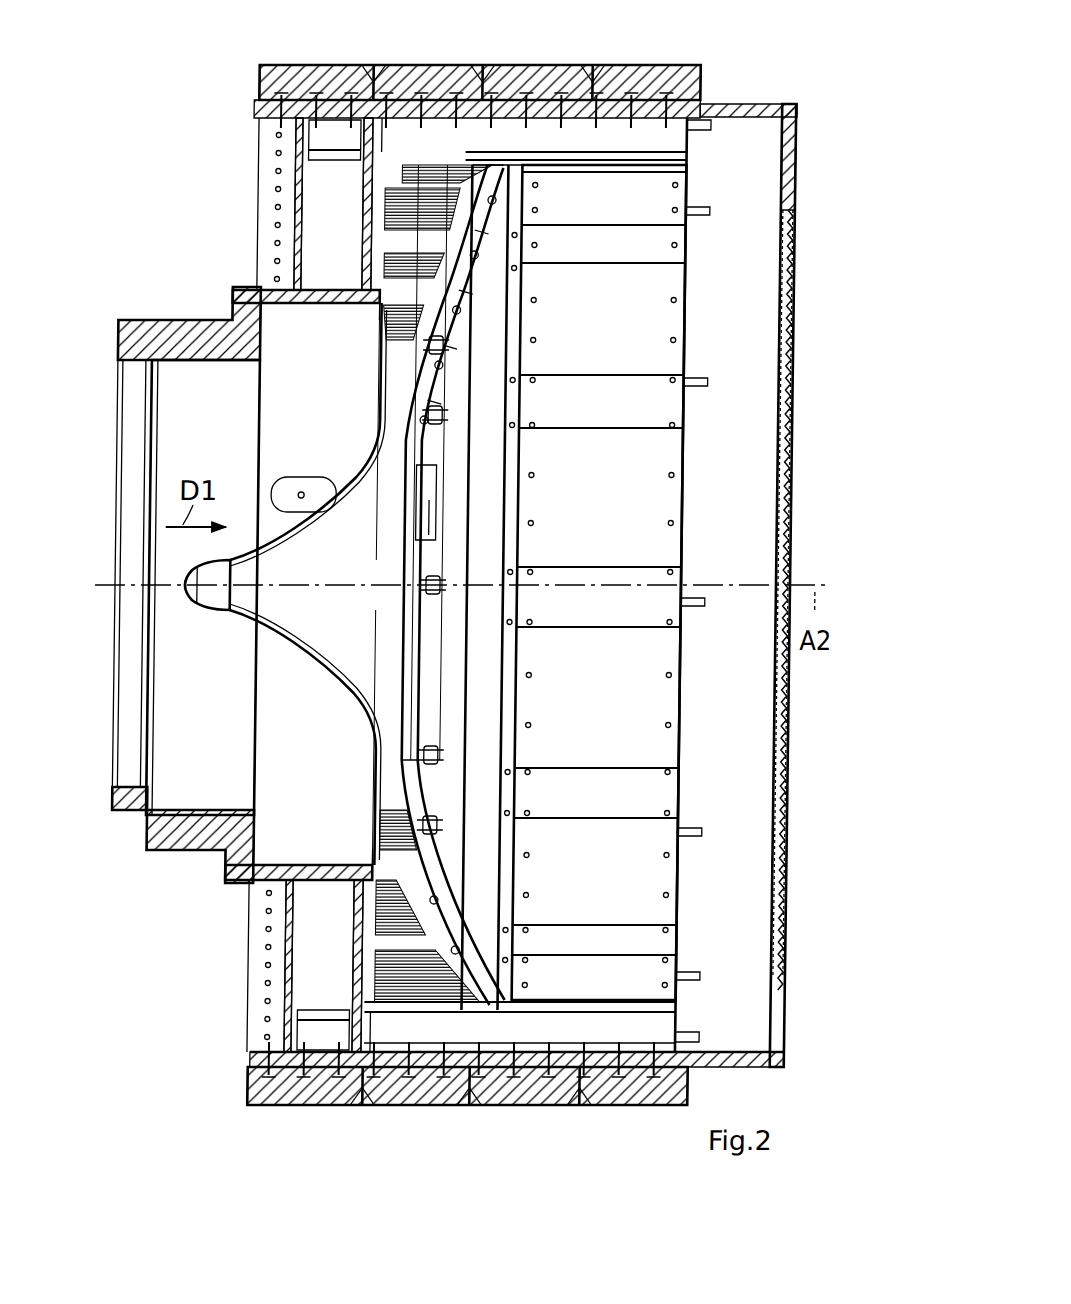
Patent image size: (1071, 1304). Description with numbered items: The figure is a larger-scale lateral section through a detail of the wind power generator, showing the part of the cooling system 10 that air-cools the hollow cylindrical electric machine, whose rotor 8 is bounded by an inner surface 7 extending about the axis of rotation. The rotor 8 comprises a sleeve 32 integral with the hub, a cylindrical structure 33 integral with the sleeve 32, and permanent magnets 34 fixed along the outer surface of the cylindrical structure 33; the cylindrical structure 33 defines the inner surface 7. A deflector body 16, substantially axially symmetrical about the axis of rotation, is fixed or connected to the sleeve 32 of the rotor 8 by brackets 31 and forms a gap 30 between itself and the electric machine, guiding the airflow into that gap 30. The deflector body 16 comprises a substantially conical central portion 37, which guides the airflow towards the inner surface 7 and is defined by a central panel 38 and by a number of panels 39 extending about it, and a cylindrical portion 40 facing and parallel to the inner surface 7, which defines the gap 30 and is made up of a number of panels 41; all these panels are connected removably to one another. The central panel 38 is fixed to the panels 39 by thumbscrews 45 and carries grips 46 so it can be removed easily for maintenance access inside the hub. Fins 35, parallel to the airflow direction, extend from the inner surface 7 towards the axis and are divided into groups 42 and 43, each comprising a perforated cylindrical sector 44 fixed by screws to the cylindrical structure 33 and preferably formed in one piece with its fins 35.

The inner surface 7 is at (725, 112).
The rotor 8 is at (712, 62).
The cooling system 10 is at (200, 235).
The deflector body 16 is at (256, 740).
The gap 30 is at (672, 1032).
The brackets 31 is at (372, 312).
The sleeve 32 is at (188, 325).
The cylindrical structure 33 is at (750, 105).
The permanent magnets 34 is at (318, 80).
The fins 35 is at (331, 148).
The conical central portion 37 is at (312, 682).
The central panel 38 is at (300, 648).
The panels 39 is at (445, 258).
The cylindrical portion 40 is at (590, 980).
The panels 41 is at (660, 322).
The group 42 is at (690, 160).
The group 43 is at (280, 148).
The perforated cylindrical sector 44 is at (343, 105).
The thumbscrews 45 is at (442, 345).
The grips 46 is at (436, 490).